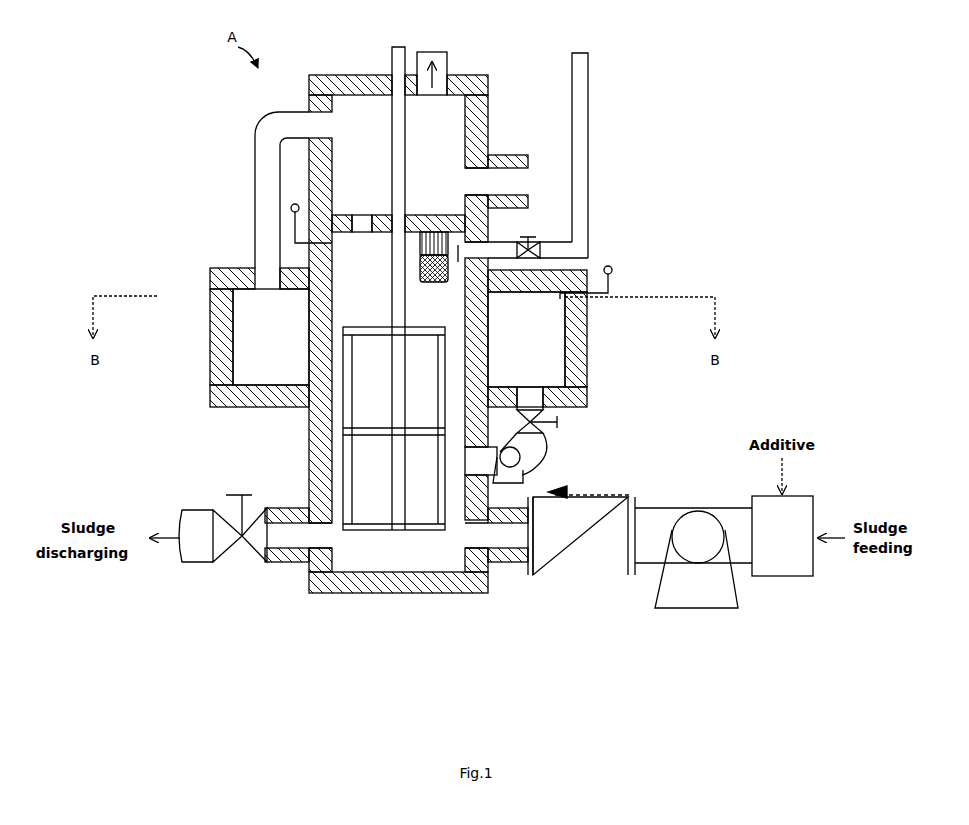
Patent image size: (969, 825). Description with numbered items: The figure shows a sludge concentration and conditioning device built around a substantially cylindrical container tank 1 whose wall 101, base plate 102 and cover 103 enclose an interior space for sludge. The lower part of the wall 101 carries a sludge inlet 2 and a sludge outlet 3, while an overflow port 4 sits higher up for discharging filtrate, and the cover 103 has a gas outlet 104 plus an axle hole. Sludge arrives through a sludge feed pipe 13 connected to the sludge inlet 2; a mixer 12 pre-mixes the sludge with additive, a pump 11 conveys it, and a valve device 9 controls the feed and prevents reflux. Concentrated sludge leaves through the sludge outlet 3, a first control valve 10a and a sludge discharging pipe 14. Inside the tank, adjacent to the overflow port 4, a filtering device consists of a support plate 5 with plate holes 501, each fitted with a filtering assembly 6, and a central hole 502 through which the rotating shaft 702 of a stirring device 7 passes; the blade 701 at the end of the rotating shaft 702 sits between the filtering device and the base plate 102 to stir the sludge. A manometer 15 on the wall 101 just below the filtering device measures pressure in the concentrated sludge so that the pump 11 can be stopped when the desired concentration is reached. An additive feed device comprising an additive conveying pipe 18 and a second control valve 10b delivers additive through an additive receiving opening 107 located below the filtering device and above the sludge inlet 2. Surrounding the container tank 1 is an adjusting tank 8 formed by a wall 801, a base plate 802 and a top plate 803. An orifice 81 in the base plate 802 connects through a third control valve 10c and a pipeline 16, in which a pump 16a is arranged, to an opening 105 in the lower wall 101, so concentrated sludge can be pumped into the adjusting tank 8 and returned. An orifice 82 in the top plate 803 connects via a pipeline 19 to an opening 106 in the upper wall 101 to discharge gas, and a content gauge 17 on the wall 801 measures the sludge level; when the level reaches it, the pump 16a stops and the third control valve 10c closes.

The container tank 1 is at (357, 333).
The wall 101 is at (318, 460).
The base plate 102 is at (370, 594).
The cover 103 is at (317, 77).
The gas outlet 104 is at (447, 52).
The opening 105 is at (490, 455).
The opening 106 is at (312, 122).
The additive receiving opening 107 is at (462, 250).
The sludge inlet 2 is at (470, 536).
The sludge outlet 3 is at (325, 540).
The overflow port 4 is at (478, 182).
The support plate 5 is at (414, 215).
The plate hole 501 is at (362, 214).
The central hole 502 is at (392, 232).
The filtering assembly 6 is at (428, 284).
The stirring device 7 is at (394, 421).
The blade 701 is at (418, 531).
The rotating shaft 702 is at (391, 62).
The adjusting tank 8 is at (568, 340).
The orifice 81 is at (530, 395).
The orifice 82 is at (270, 292).
The wall 801 is at (210, 331).
The base plate 802 is at (210, 397).
The top plate 803 is at (210, 274).
The valve device 9 is at (575, 545).
The first control valve 10a is at (220, 563).
The second control valve 10b is at (530, 238).
The third control valve 10c is at (559, 423).
The pump 11 is at (698, 609).
The mixer 12 is at (775, 579).
The sludge feed pipe 13 is at (655, 507).
The sludge discharging pipe 14 is at (190, 563).
The manometer 15 is at (295, 204).
The pipeline 16 is at (545, 442).
The pump 16a is at (525, 484).
The content gauge 17 is at (614, 266).
The additive conveying pipe 18 is at (590, 158).
The pipeline 19 is at (258, 200).